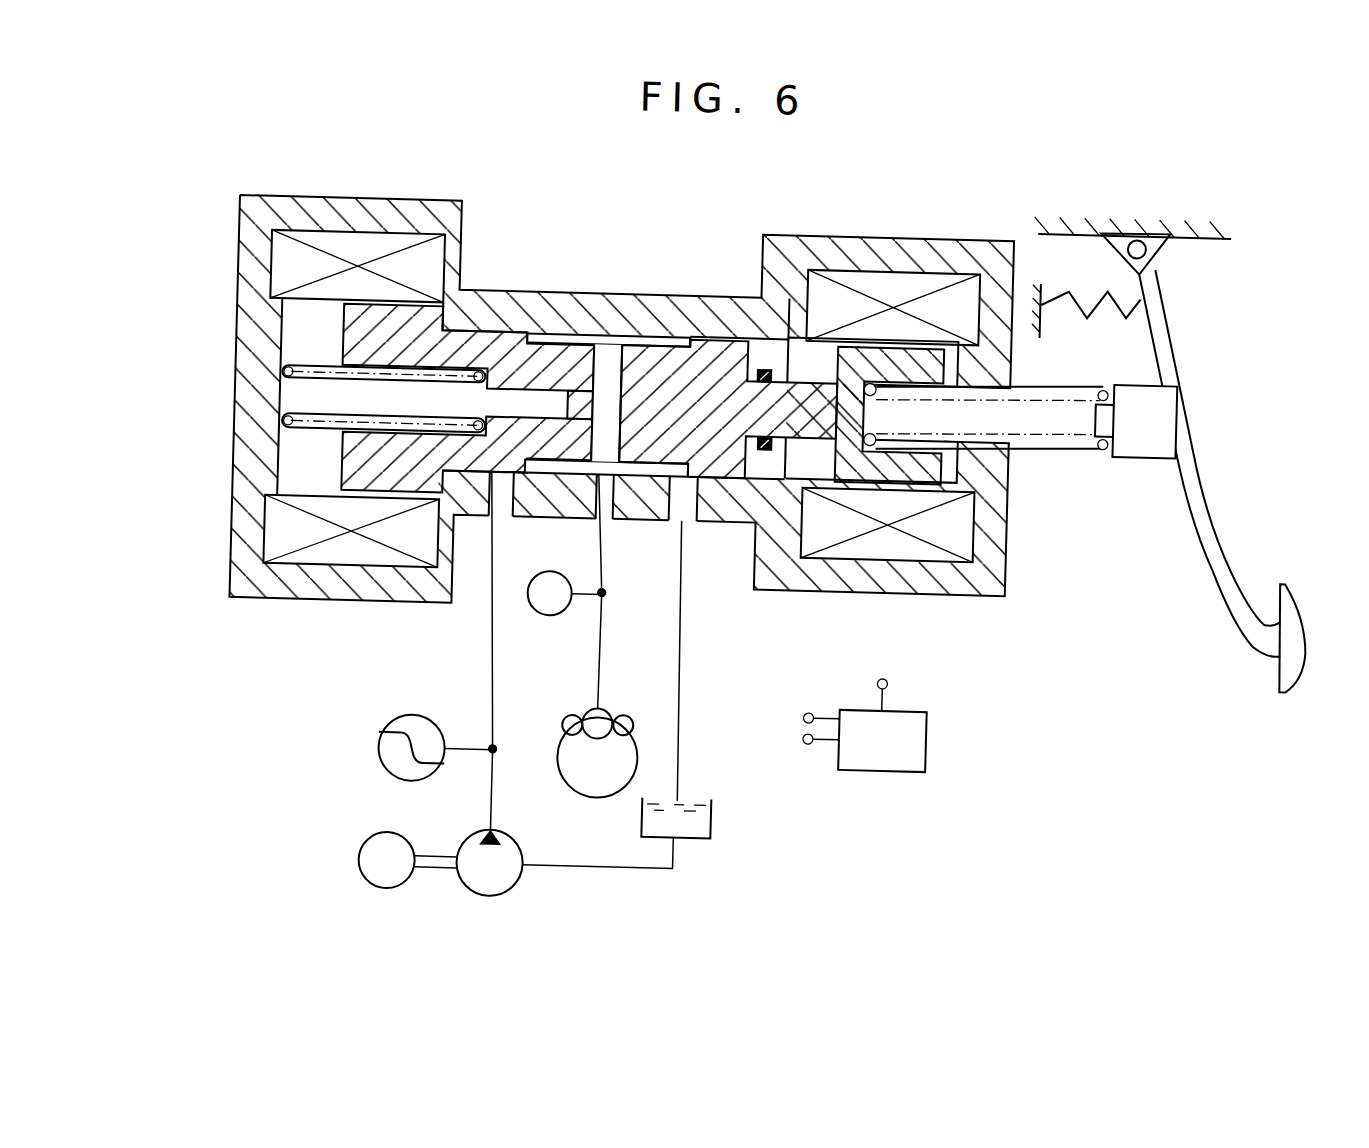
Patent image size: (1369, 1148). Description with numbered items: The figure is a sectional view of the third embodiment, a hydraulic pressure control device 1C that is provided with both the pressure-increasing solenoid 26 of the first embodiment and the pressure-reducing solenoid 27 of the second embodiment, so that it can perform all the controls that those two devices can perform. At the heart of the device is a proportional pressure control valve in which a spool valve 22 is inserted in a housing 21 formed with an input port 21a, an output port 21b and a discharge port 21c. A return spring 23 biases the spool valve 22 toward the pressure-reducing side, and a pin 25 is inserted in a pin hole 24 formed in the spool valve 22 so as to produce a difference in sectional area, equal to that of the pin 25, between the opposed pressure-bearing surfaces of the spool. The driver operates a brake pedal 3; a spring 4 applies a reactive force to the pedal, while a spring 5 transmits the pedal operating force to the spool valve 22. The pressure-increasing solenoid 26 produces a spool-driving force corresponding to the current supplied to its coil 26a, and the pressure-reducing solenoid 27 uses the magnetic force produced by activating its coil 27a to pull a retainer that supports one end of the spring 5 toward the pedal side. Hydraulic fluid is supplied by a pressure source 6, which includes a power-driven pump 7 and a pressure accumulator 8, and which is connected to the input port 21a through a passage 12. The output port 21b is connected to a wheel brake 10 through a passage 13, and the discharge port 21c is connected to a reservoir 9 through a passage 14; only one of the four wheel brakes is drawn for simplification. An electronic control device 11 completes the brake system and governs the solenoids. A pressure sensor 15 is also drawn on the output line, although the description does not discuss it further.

The hydraulic pressure control device 1C is at (622, 429).
The brake pedal 3 is at (1222, 499).
The spring 4 is at (1075, 275).
The spring 5 is at (1085, 426).
The pressure source 6 is at (514, 893).
The power-driven pump 7 is at (526, 888).
The pressure accumulator 8 is at (392, 754).
The reservoir 9 is at (727, 816).
The wheel brake 10 is at (643, 703).
The electronic control device 11 is at (880, 740).
The passage 12 is at (510, 706).
The passage 13 is at (610, 634).
The passage 14 is at (699, 633).
The pressure sensor 15 is at (557, 610).
The housing 21 is at (586, 304).
The input port 21a is at (504, 504).
The output port 21b is at (625, 506).
The discharge port 21c is at (697, 499).
The spool valve 22 is at (501, 338).
The return spring 23 is at (287, 366).
The pin hole 24 is at (595, 388).
The pin 25 is at (514, 396).
The pressure-increasing solenoid 26 is at (387, 564).
The coil 26a is at (336, 553).
The pressure-reducing solenoid 27 is at (942, 542).
The coil 27a is at (971, 513).